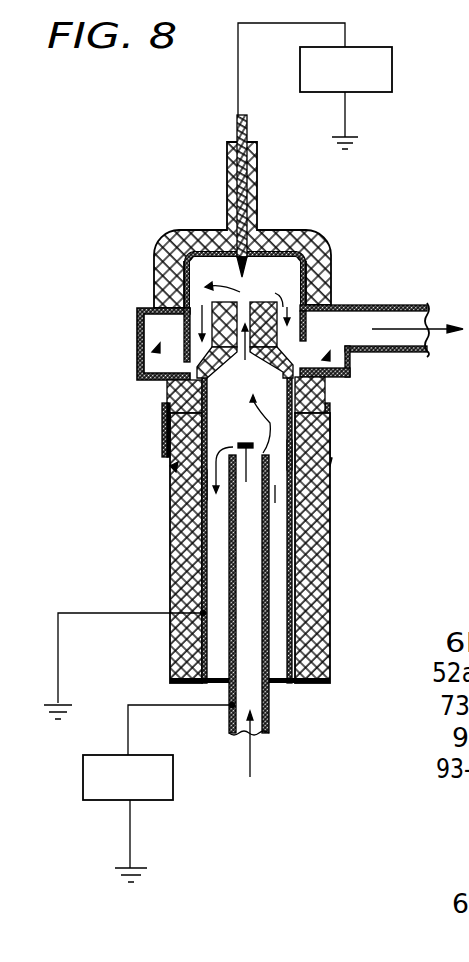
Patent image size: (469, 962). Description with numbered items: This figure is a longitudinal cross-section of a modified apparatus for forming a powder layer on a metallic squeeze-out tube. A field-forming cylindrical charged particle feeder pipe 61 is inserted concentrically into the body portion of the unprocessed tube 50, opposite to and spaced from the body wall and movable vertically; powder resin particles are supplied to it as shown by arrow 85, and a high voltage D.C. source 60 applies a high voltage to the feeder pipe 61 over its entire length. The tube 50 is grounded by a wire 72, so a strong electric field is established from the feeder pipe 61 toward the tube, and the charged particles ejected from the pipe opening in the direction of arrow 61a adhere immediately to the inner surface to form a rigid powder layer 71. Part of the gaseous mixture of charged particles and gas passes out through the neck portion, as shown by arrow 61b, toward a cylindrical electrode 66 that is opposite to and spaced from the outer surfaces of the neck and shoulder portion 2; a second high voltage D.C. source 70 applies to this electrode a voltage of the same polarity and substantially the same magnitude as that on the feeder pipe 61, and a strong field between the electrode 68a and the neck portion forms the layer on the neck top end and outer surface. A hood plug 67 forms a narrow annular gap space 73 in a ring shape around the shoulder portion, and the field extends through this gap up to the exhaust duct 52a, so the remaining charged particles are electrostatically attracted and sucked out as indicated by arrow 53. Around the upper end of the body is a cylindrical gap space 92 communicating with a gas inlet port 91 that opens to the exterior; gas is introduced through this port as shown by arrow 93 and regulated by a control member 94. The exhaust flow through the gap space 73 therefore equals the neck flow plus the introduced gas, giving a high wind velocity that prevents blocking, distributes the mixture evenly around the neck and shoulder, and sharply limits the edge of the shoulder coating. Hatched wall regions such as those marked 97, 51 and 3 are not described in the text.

The high voltage D.C. source 70 is at (392, 62).
The cylindrical electrode 66 is at (282, 258).
The hood plug 67 is at (183, 245).
The electrode 68a is at (255, 272).
The arrow representing flow of gaseous mixture through the neck portion 61b is at (165, 300).
The exhaust duct 52a is at (152, 335).
The annular gap space 73 is at (167, 390).
The cylindrical gap space 92 is at (162, 418).
The control member 94 is at (165, 445).
The arrow representing introduced gas flow 93 is at (172, 470).
The gas inlet port 91 is at (200, 480).
The arrow representing flow of charged particles 61a is at (204, 485).
The left body wall 97 is at (216, 563).
The wire 72 is at (58, 648).
The powder layer 71 is at (332, 385).
The arrow representing suction air flow 53 is at (432, 343).
The charged particle feeder pipe 61 is at (263, 547).
The right body wall 51 is at (313, 582).
The unprocessed tube 50 is at (297, 637).
The arrow representing flow of powder resin particles 85 is at (253, 753).
The high voltage D.C. source 60 is at (175, 777).
The nozzle electrodes 3 is at (263, 338).
The shoulder portion 2 is at (278, 362).